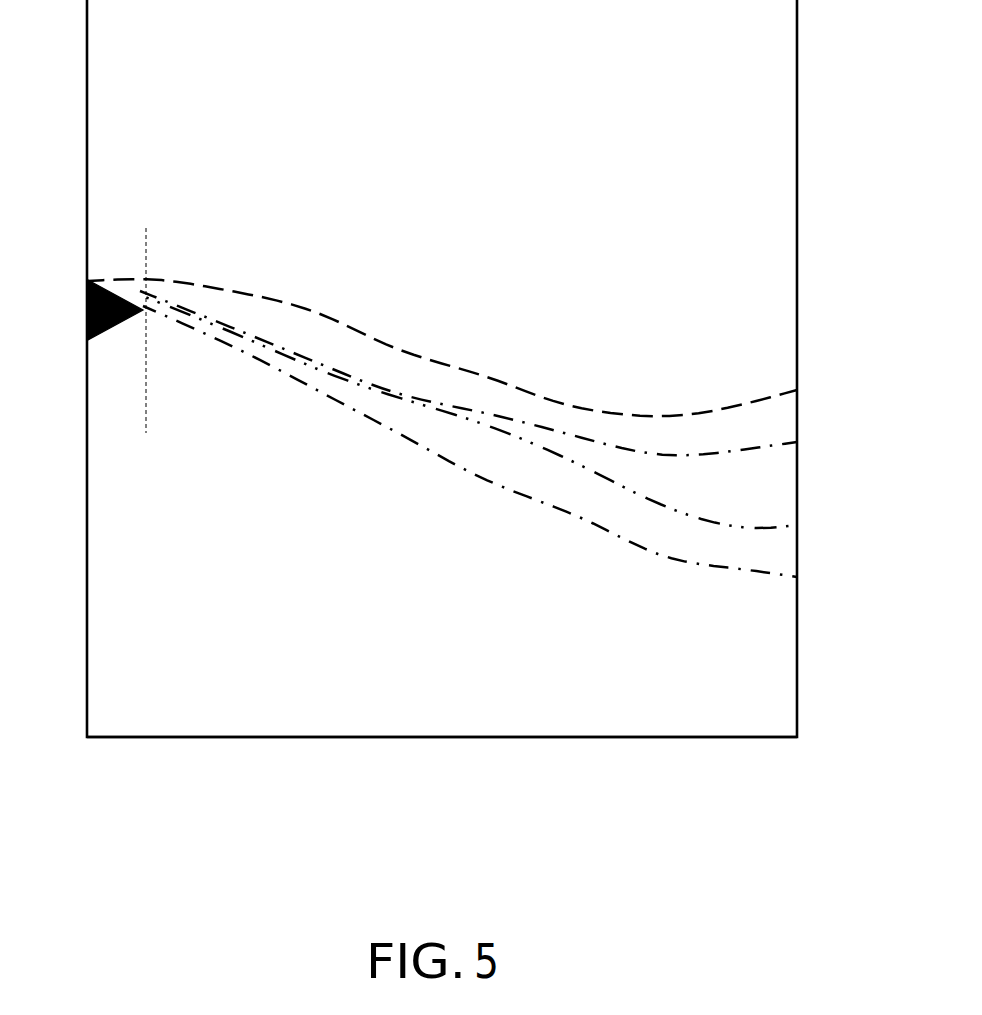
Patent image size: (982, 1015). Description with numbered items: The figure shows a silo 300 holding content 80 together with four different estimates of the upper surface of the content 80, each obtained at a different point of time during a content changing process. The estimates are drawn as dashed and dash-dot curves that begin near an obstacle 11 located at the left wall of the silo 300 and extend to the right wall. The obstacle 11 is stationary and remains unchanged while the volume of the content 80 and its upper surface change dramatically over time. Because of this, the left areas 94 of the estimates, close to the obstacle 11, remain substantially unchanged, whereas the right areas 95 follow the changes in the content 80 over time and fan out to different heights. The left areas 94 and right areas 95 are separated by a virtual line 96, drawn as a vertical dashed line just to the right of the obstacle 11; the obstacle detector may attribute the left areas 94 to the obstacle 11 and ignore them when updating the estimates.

The obstacle 11 is at (87, 310).
The content 80 is at (454, 691).
The substrate boundary 300 is at (603, 737).
The virtual line 96 is at (136, 346).
The left areas 94 is at (148, 180).
The right areas 95 is at (178, 240).